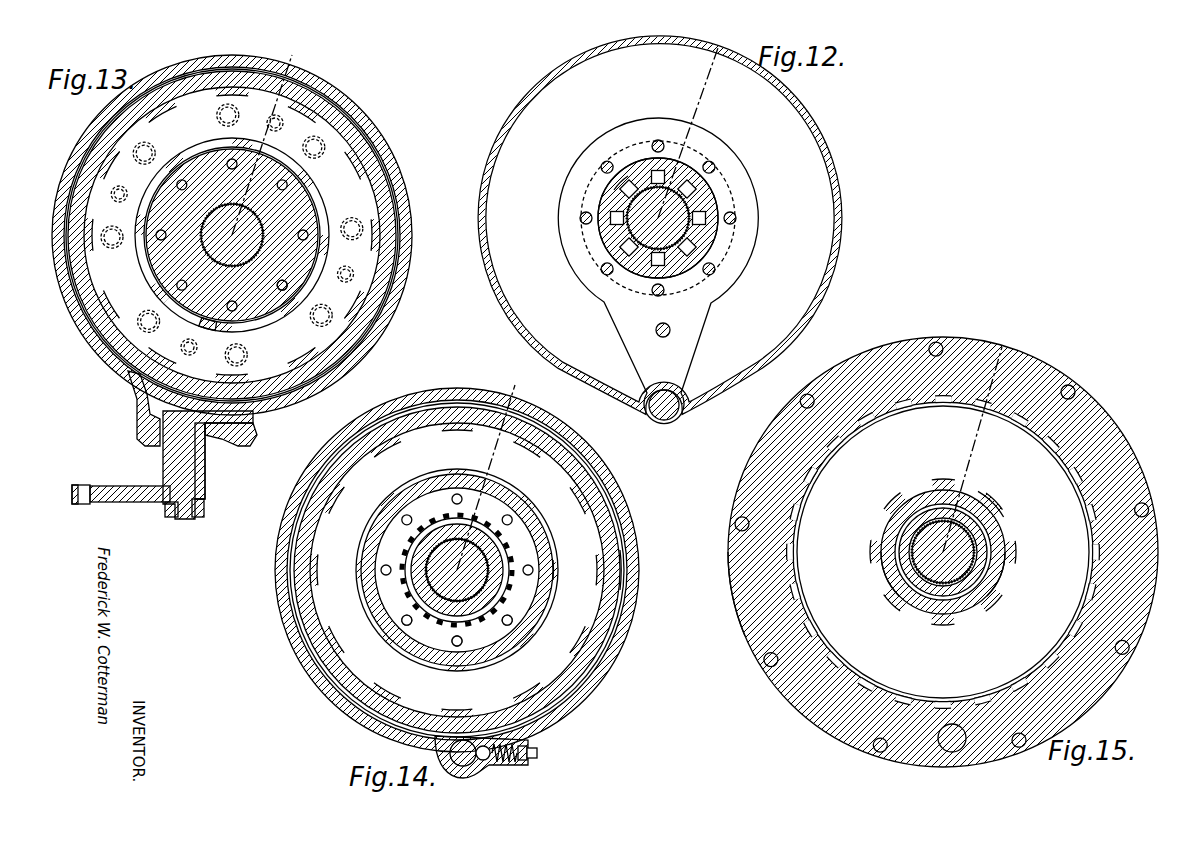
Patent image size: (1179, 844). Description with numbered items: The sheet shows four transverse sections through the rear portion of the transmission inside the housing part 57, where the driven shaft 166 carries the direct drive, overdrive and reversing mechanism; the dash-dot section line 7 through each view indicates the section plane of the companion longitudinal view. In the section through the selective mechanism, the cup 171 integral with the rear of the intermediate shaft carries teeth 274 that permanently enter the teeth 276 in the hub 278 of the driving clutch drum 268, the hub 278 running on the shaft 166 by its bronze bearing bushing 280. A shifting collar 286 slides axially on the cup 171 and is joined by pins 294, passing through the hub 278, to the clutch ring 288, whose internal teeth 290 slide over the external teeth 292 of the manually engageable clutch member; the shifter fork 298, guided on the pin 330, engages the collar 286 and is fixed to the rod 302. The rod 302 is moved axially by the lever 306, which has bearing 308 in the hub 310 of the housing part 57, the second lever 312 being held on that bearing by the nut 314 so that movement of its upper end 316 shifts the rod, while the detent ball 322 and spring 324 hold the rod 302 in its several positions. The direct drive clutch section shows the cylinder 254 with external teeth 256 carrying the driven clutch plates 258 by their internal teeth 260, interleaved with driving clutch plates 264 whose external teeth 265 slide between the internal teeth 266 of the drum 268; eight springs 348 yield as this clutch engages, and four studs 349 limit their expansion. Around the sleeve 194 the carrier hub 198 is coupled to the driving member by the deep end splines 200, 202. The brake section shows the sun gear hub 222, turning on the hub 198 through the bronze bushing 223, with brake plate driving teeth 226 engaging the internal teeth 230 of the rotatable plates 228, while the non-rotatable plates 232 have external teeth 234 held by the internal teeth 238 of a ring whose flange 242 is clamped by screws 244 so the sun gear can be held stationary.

In FIG. 13, the section line 7- 7 is at (269, 137).
In FIG. 12, the section line 7- 7 is at (693, 123).
In FIG. 14, the section line 7- 7 is at (493, 466).
In FIG. 15, the section line 7- 7 is at (980, 437).
In FIG. 13, the housing part 57 is at (232, 235).
In FIG. 12, the housing part 57 is at (660, 224).
In FIG. 14, the housing part 57 is at (457, 574).
In FIG. 13, the driven shaft 166 is at (232, 235).
In FIG. 12, the driven shaft 166 is at (658, 218).
In FIG. 14, the driven shaft 166 is at (457, 570).
In FIG. 15, the driven shaft 166 is at (943, 552).
In FIG. 12, the cup 171 is at (693, 218).
In FIG. 14, the sleeve 194 is at (479, 570).
In FIG. 15, the sleeve 194 is at (973, 552).
In FIG. 15, the hub of the planet pinion carrier 198 is at (1002, 583).
In FIG. 14, the end splines 200 is at (468, 570).
In FIG. 14, the end splines 202 is at (457, 570).
In FIG. 15, the sun gear hub 222 is at (928, 552).
In FIG. 15, the bronze bushing 223 is at (972, 548).
In FIG. 15, the brake plate driving teeth 226 is at (881, 583).
In FIG. 15, the rotatable plates 228 is at (1001, 486).
In FIG. 15, the internal teeth 230 is at (943, 540).
In FIG. 15, the non-rotatable plates 232 is at (943, 552).
In FIG. 15, the external teeth 234 is at (943, 552).
In FIG. 15, the internal teeth 238 is at (943, 552).
In FIG. 15, the flange 242 is at (729, 603).
In FIG. 15, the screws 244 is at (935, 547).
In FIG. 13, the cylinder 254 is at (250, 235).
In FIG. 14, the cylinder 254 is at (470, 570).
In FIG. 13, the external teeth 256 is at (219, 303).
In FIG. 14, the external teeth 256 is at (469, 570).
In FIG. 13, the driven clutch plates 258 is at (256, 235).
In FIG. 14, the driven clutch plates 258 is at (484, 570).
In FIG. 13, the internal teeth 260 is at (253, 235).
In FIG. 14, the internal teeth 260 is at (571, 576).
In FIG. 13, the driving clutch plates 264 is at (149, 73).
In FIG. 14, the driving clutch plates 264 is at (479, 570).
In FIG. 13, the external teeth 265 is at (99, 108).
In FIG. 14, the external teeth 265 is at (492, 570).
In FIG. 14, the internal teeth 266 is at (647, 570).
In FIG. 13, the driving clutch drum 268 is at (256, 235).
In FIG. 14, the driving clutch drum 268 is at (482, 570).
In FIG. 12, the teeth 274 is at (658, 204).
In FIG. 12, the teeth 276 is at (668, 204).
In FIG. 13, the hub 278 is at (232, 235).
In FIG. 13, the bronze bearing bushing 280 is at (232, 235).
In FIG. 12, the bronze bearing bushing 280 is at (626, 190).
In FIG. 12, the shifting collar 286 is at (677, 218).
In FIG. 14, the clutch ring 288 is at (457, 576).
In FIG. 14, the internal teeth 290 is at (478, 635).
In FIG. 14, the external teeth 292 is at (432, 628).
In FIG. 13, the pins 294 is at (290, 268).
In FIG. 12, the pins 294 is at (688, 218).
In FIG. 14, the pins 294 is at (537, 615).
In FIG. 12, the shifter fork 298 is at (658, 271).
In FIG. 13, the rod 302 is at (239, 447).
In FIG. 12, the rod 302 is at (685, 394).
In FIG. 14, the rod 302 is at (454, 770).
In FIG. 15, the rod 302 is at (958, 753).
In FIG. 13, the lever 306 is at (222, 408).
In FIG. 13, the bearing 308 is at (217, 461).
In FIG. 13, the hub 310 is at (208, 465).
In FIG. 13, the second lever 312 is at (130, 507).
In FIG. 13, the nut 314 is at (174, 521).
In FIG. 13, the upper end 316 is at (75, 507).
In FIG. 14, the detent ball 322 is at (496, 772).
In FIG. 14, the spring 324 is at (535, 773).
In FIG. 12, the pin 330 is at (655, 343).
In FIG. 13, the springs 348 is at (232, 235).
In FIG. 13, the studs 349 is at (232, 248).